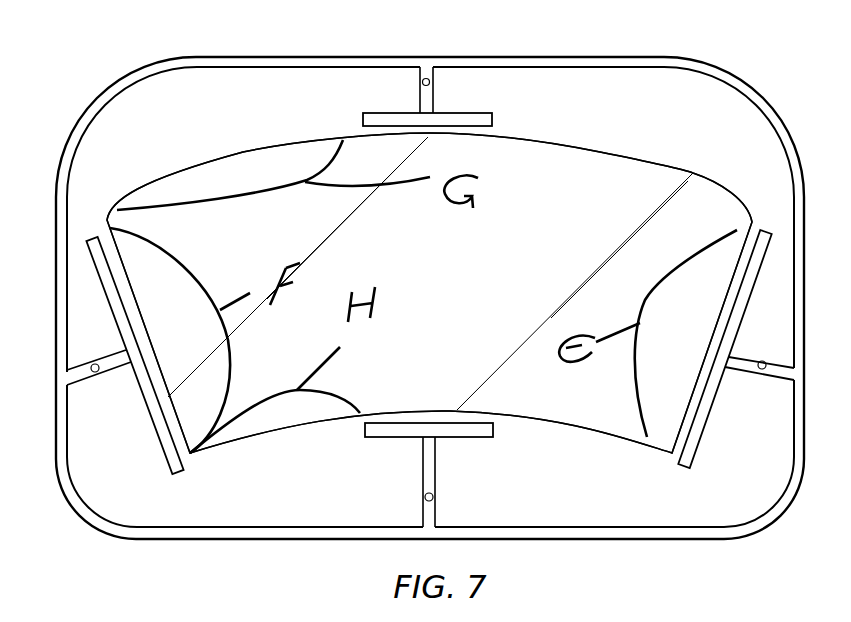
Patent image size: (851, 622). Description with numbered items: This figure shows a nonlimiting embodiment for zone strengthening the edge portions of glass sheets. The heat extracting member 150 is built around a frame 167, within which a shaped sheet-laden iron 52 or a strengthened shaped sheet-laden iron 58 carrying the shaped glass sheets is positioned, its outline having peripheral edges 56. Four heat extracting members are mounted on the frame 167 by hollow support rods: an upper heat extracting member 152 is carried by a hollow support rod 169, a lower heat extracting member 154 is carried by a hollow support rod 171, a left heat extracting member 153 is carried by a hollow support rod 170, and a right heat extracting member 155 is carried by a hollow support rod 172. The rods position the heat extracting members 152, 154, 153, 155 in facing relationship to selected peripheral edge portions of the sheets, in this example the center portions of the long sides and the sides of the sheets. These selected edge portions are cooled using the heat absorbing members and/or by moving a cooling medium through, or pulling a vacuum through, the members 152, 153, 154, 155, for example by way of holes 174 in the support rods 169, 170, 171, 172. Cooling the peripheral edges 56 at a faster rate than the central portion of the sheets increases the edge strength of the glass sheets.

The heat extracting member 150 is at (745, 76).
The frame 167 is at (807, 233).
The shaped sheet-laden iron 52 is at (415, 259).
The strengthened shaped sheet-laden iron 58 is at (415, 332).
The peripheral edges 56 is at (737, 280).
The heat extracting member 152 is at (493, 120).
The hollow support rod 169 is at (433, 100).
The heat extracting member 154 is at (386, 437).
The hollow support rod 171 is at (437, 470).
The heat extracting member 153 is at (155, 436).
The heat extracting member 155 is at (757, 283).
The hollow support rod 170 is at (85, 384).
The hollow support rod 172 is at (740, 369).
The holes 174 is at (421, 82).